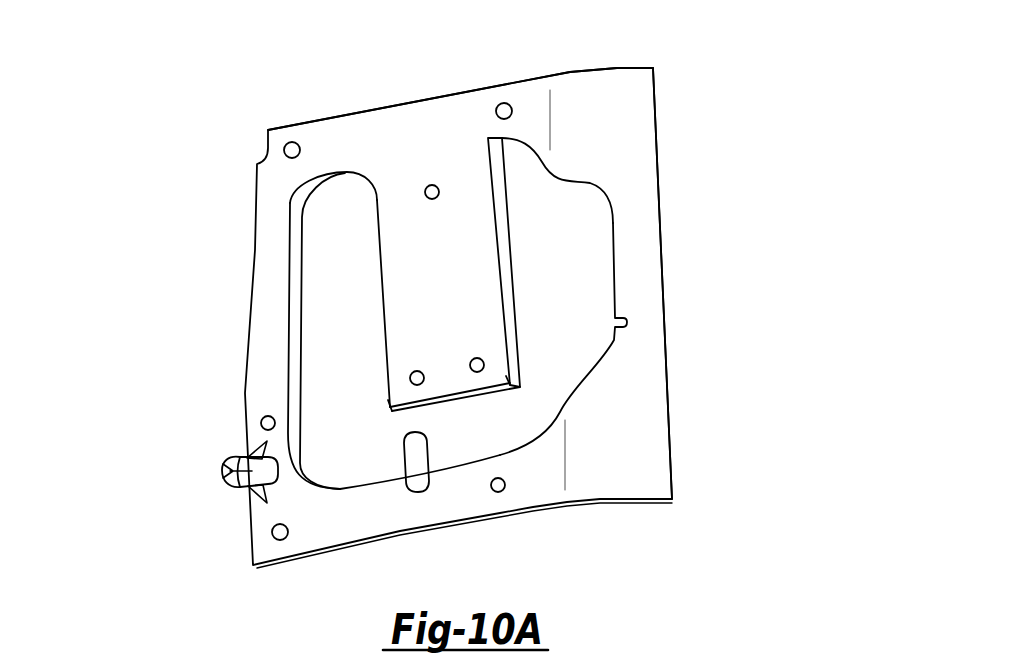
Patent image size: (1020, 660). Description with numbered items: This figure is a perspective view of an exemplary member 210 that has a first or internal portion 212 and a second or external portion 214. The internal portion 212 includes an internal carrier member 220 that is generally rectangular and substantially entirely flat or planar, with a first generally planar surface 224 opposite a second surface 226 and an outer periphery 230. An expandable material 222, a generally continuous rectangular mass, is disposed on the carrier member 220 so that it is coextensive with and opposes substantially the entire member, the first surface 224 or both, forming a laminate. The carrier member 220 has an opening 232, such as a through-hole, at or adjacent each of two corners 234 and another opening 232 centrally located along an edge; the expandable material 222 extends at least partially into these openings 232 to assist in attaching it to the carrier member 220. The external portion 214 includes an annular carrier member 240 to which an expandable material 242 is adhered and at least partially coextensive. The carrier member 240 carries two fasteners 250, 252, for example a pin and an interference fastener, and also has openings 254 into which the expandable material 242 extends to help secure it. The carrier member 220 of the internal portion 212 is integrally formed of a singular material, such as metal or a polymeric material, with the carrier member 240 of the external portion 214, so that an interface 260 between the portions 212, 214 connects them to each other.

The member 210 is at (680, 50).
The internal portion 212 is at (595, 283).
The external portion 214 is at (762, 238).
The carrier member 220 is at (432, 276).
The expandable material 222 is at (502, 210).
The first generally planar surface 224 is at (522, 283).
The second surface 226 is at (433, 326).
The outer periphery 230 is at (393, 313).
The opening 232 is at (432, 185).
The corners 234 is at (408, 402).
The carrier member 240 is at (543, 485).
The expandable material 242 is at (298, 293).
The fastener 250 is at (413, 460).
The fastener 252 is at (185, 464).
The openings 254 is at (292, 146).
The interface 260 is at (367, 128).